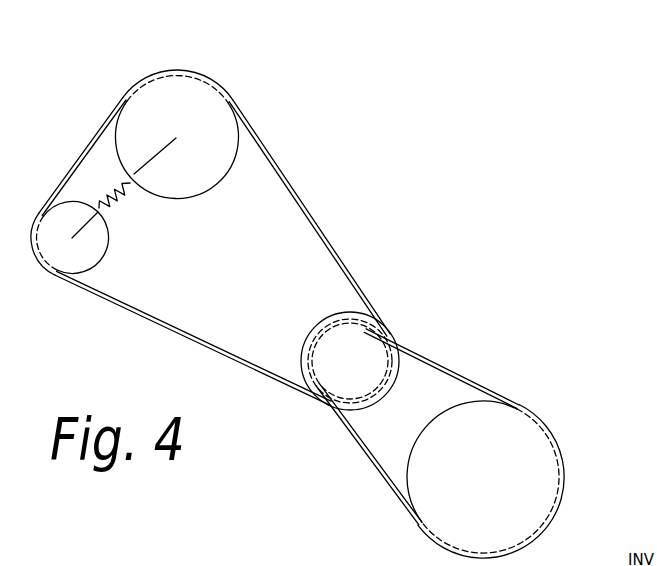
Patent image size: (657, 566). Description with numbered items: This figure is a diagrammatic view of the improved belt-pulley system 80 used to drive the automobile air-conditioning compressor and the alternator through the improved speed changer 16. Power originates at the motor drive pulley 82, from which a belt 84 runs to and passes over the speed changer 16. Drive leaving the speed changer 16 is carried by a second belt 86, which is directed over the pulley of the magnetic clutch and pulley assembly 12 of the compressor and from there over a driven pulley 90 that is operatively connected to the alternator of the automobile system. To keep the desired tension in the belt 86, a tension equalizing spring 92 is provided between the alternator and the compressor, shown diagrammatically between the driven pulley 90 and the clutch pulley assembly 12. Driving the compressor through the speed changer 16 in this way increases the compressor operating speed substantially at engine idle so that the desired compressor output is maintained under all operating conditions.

The magnetic clutch and pulley assembly 12 is at (158, 88).
The speed changer 16 is at (310, 330).
The belt-pulley system 80 is at (297, 314).
The motor drive pulley 82 is at (522, 437).
The belt 84 is at (448, 367).
The belt 86 is at (345, 268).
The driven pulley 90 is at (97, 249).
The tension equalizing spring 92 is at (114, 199).